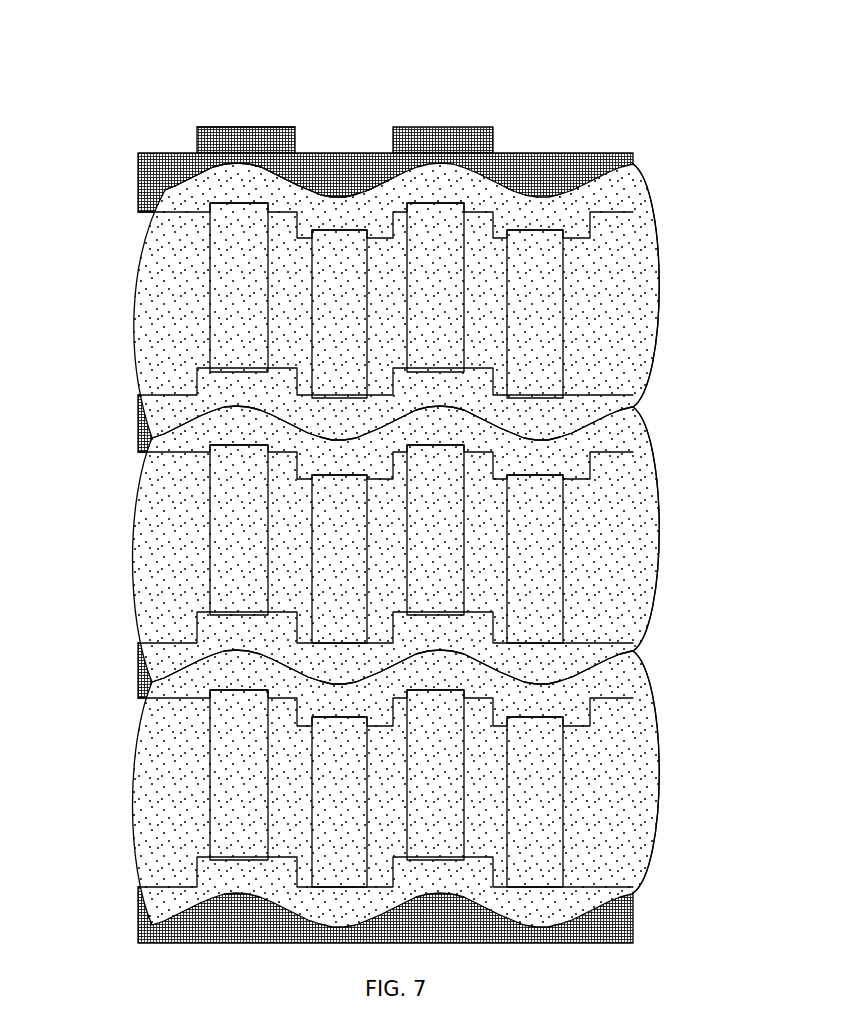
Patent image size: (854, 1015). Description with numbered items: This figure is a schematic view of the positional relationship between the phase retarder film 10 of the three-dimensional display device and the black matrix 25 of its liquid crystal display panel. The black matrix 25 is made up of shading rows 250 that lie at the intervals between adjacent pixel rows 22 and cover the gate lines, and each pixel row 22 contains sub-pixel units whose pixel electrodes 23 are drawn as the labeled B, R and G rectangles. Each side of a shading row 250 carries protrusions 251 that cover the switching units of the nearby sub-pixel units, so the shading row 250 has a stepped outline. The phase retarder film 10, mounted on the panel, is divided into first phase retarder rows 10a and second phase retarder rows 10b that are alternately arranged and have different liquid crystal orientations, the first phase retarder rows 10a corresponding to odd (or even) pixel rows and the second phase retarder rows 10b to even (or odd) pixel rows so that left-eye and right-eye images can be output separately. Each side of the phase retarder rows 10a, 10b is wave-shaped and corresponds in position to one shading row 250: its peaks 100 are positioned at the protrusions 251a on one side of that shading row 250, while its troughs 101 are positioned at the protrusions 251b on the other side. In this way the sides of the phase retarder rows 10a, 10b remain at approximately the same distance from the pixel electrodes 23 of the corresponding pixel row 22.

The phase retarder film 10 is at (435, 472).
The first phase retarder row 10a is at (660, 295).
The second phase retarder row 10b is at (658, 553).
The pixel row 22 is at (152, 322).
The pixel electrode 23 is at (364, 232).
The black matrix 25 is at (385, 106).
The shading row 250 is at (563, 153).
The protrusion 251 is at (461, 127).
The protrusion of one side of the shading row 251a is at (210, 127).
The protrusion of the other side of the shading row 251b is at (300, 233).
The peak 100 is at (243, 163).
The trough 101 is at (347, 200).